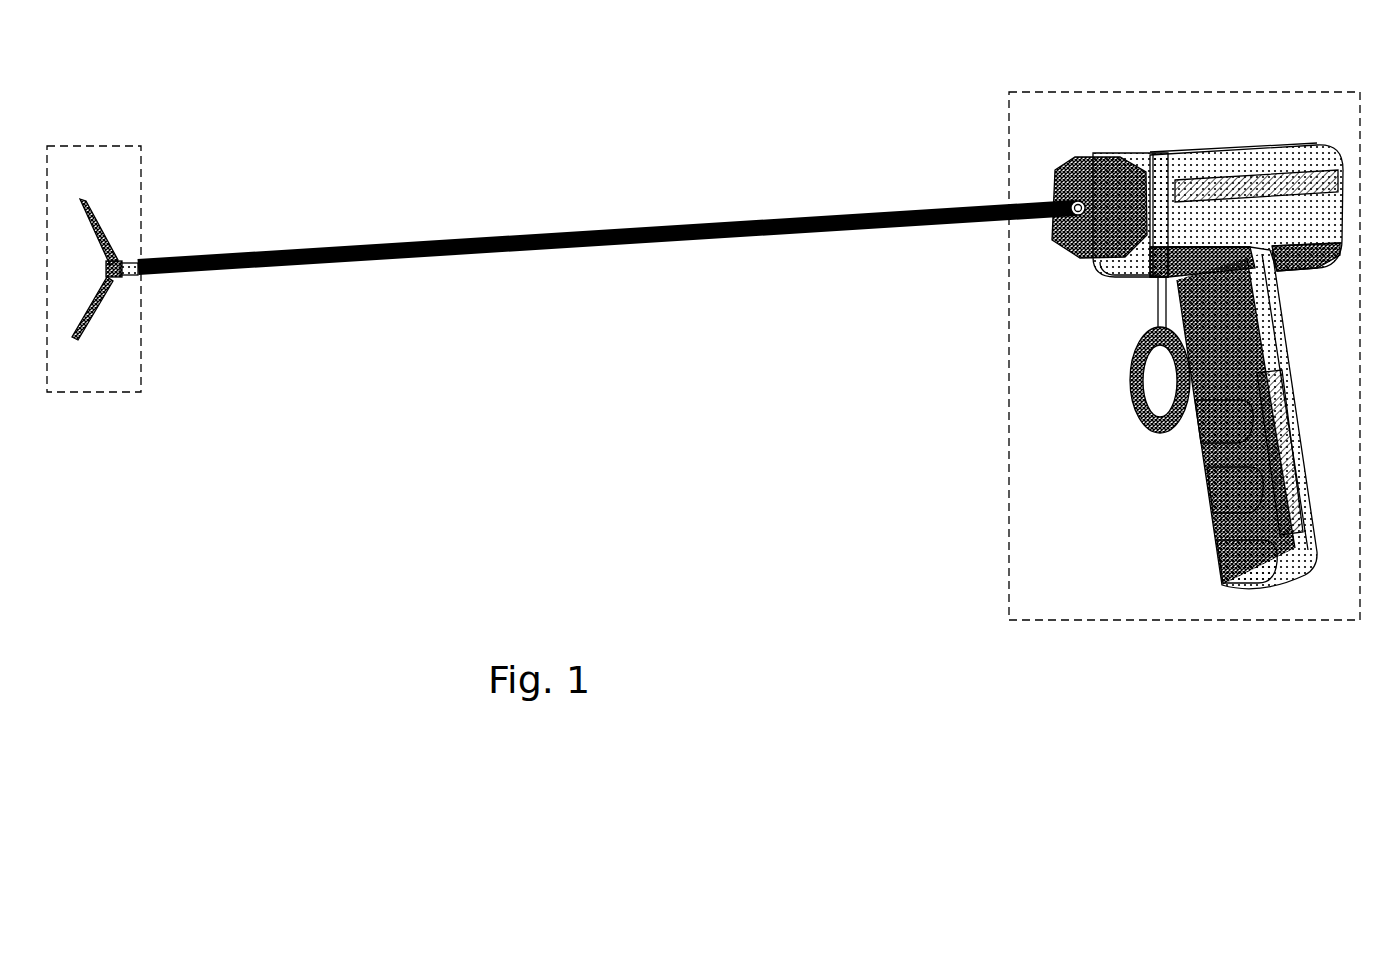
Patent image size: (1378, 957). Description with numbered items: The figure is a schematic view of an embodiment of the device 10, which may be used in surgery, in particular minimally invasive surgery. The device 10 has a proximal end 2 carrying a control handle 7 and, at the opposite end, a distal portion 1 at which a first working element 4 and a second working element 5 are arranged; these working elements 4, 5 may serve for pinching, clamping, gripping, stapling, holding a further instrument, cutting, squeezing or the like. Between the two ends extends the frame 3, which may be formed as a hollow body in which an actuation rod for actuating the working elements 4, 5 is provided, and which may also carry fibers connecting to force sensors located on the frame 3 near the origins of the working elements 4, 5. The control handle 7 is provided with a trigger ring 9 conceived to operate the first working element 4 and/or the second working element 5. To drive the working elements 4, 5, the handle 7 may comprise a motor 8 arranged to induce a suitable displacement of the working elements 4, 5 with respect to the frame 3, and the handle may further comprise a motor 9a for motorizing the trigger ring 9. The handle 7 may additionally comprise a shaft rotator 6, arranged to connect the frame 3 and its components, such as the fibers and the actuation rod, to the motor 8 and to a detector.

The distal portion 1 is at (107, 143).
The proximal end 2 is at (1070, 90).
The frame 3 is at (525, 250).
The first working element 4 is at (95, 217).
The second working element 5 is at (80, 343).
The shaft rotator 6 is at (1068, 248).
The control handle 7 is at (1163, 162).
The motor 8 is at (1235, 175).
The trigger ring 9 is at (1140, 422).
The motor for motorizing the trigger 9a is at (1290, 492).
The device 10 is at (492, 71).